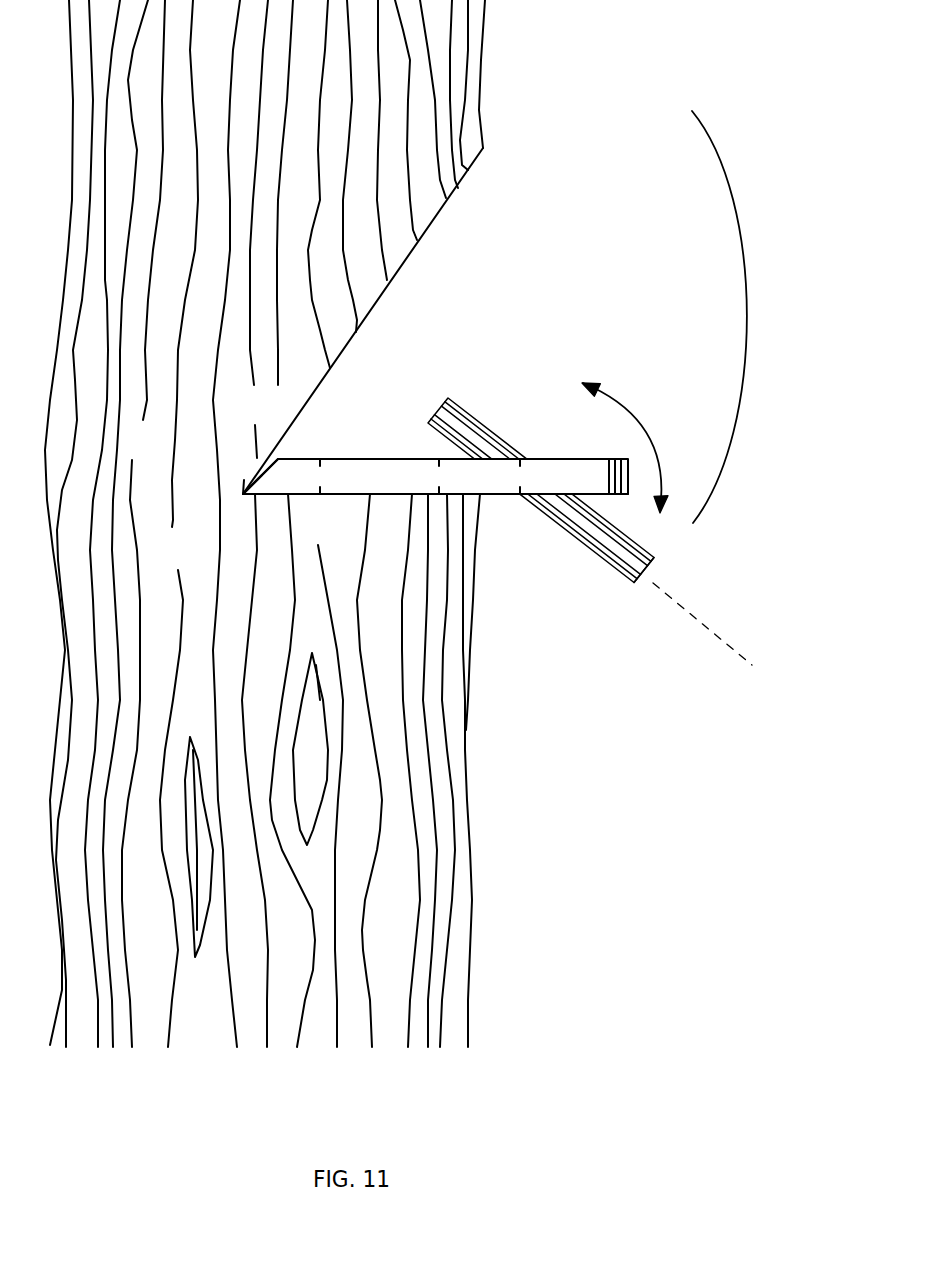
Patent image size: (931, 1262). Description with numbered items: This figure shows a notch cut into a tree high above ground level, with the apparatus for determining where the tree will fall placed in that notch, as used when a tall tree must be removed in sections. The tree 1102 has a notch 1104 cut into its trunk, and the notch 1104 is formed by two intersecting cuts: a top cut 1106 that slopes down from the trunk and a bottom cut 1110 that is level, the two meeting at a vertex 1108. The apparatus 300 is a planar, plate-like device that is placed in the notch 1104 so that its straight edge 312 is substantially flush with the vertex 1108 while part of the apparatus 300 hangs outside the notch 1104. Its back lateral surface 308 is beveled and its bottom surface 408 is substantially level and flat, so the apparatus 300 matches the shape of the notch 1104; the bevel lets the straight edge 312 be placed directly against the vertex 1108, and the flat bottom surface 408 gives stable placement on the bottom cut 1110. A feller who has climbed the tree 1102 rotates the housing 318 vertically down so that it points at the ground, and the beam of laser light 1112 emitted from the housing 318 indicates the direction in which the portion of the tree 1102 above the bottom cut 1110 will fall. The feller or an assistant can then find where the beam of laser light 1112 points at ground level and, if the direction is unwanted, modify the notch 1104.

The tree 1102 is at (483, 36).
The notch 1104 is at (750, 302).
The top cut 1106 is at (388, 282).
The vertex 1108 is at (228, 494).
The bottom cut 1110 is at (375, 496).
The beam of laser light 1112 is at (659, 589).
The apparatus 300 is at (500, 385).
The back lateral surface 308 is at (248, 463).
The straight edge 312 is at (243, 518).
The housing 318 is at (578, 542).
The bottom surface 408 is at (498, 495).